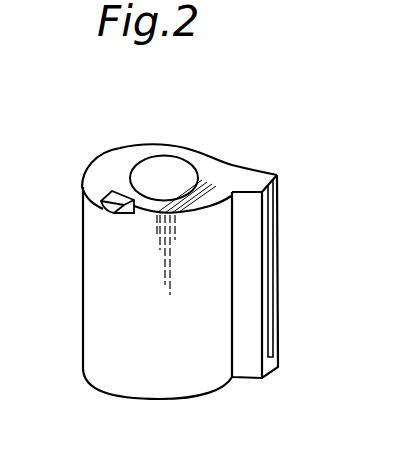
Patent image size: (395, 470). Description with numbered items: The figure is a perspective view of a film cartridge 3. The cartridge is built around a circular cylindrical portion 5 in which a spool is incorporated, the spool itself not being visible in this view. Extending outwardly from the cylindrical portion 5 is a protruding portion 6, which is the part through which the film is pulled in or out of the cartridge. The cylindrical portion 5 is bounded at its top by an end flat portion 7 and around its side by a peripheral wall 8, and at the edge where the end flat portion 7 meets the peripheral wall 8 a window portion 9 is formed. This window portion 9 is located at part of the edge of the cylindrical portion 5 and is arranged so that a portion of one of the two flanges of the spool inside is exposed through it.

The film cartridge 3 is at (190, 140).
The circular cylindrical portion 5 is at (101, 293).
The protruding portion 6 is at (255, 178).
The end flat portion 7 is at (117, 157).
The peripheral wall 8 is at (101, 346).
The window portion 9 is at (113, 213).